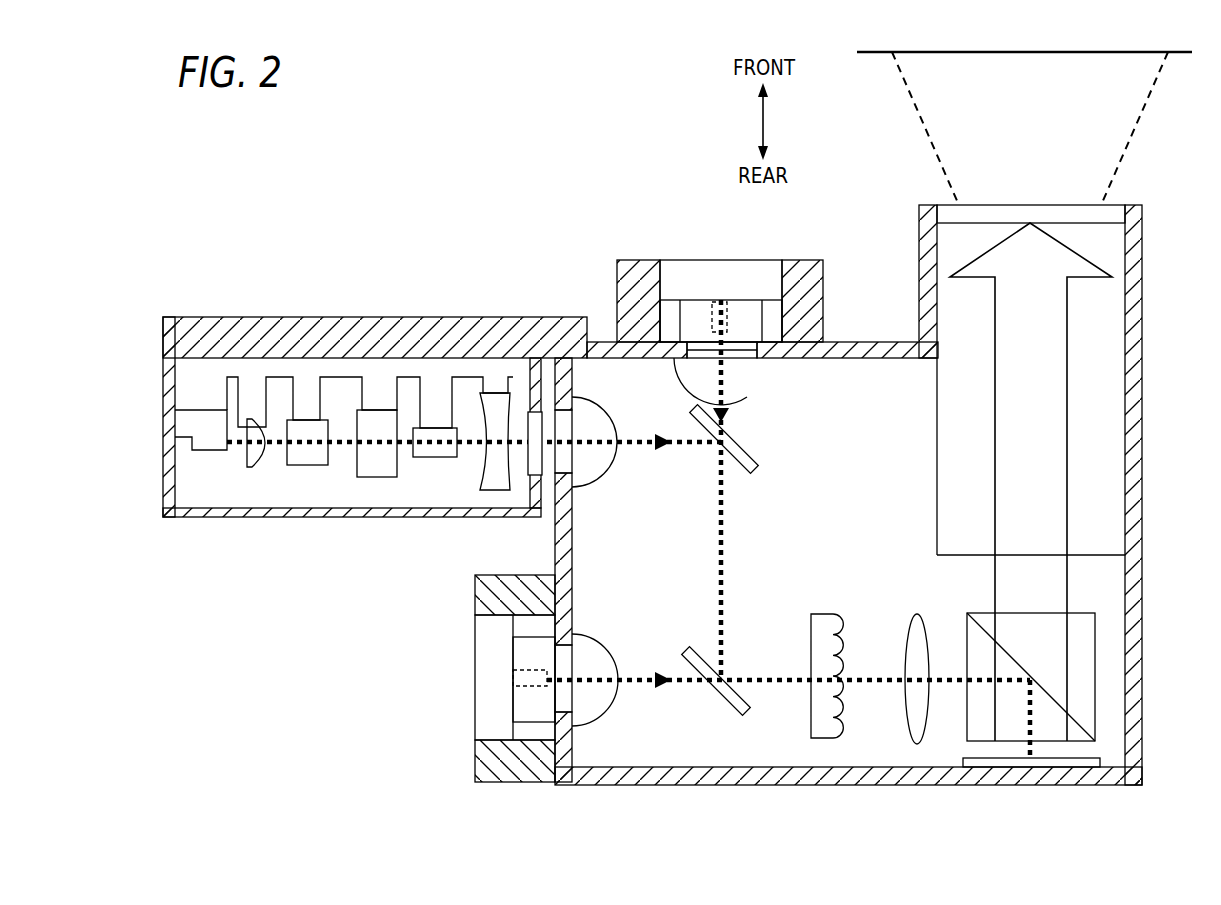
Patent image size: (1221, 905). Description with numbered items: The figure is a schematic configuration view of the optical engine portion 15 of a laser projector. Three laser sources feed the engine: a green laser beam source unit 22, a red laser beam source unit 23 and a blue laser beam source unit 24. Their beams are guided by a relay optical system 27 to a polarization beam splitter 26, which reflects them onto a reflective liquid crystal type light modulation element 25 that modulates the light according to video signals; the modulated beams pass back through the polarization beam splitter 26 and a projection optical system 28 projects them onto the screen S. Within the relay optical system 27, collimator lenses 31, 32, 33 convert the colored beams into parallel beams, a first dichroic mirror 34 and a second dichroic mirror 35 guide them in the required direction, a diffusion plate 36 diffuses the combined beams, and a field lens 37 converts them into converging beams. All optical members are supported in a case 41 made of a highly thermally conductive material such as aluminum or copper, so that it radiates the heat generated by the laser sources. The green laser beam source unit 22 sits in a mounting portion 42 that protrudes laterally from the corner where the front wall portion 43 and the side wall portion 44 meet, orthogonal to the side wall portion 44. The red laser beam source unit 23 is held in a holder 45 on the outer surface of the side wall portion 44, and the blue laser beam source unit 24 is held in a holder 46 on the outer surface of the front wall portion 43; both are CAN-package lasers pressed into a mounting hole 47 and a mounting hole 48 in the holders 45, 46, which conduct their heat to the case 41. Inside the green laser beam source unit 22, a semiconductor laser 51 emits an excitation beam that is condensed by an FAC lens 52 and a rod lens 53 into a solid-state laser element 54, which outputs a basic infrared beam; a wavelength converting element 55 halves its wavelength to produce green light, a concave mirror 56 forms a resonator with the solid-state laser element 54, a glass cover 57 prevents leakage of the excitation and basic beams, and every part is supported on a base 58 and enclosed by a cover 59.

The screen S is at (873, 52).
The optical engine portion 15 is at (533, 268).
The green laser beam source unit 22 is at (375, 422).
The red laser beam source unit 23 is at (475, 695).
The blue laser beam source unit 24 is at (738, 264).
The light modulation element 25 is at (1012, 767).
The polarization beam splitter 26 is at (1097, 657).
The relay optical system 27 is at (794, 533).
The projection optical system 28 is at (938, 430).
The collimator lens 31 is at (607, 412).
The collimator lens 32 is at (600, 640).
The collimator lens 33 is at (745, 395).
The first dichroic mirror 34 is at (752, 455).
The second dichroic mirror 35 is at (727, 707).
The diffusion plate 36 is at (822, 614).
The field lens 37 is at (917, 614).
The case 41 is at (735, 792).
The mounting portion 42 is at (373, 317).
The front wall portion 43 is at (853, 342).
The side wall portion 44 is at (572, 537).
The holder 45 is at (475, 760).
The holder 46 is at (803, 257).
The mounting hole 47 is at (493, 618).
The mounting hole 48 is at (778, 282).
The semiconductor laser 51 is at (210, 450).
The FAC lens 52 is at (252, 467).
The wavelength conversion element 53 is at (310, 465).
The solid-state laser element 54 is at (382, 477).
The wavelength converting element 55 is at (435, 457).
The concave mirror 56 is at (492, 490).
The glass cover 57 is at (527, 418).
The base 58 is at (257, 358).
The cover 59 is at (277, 518).